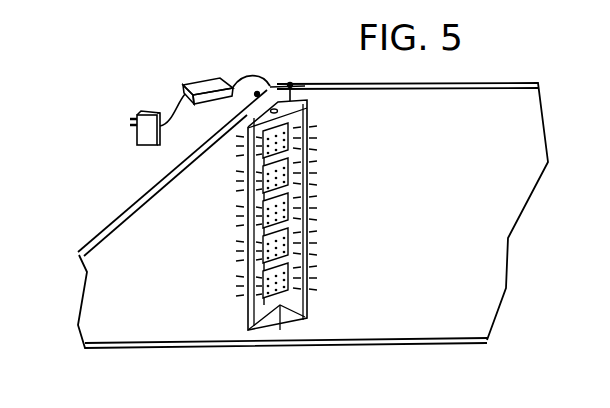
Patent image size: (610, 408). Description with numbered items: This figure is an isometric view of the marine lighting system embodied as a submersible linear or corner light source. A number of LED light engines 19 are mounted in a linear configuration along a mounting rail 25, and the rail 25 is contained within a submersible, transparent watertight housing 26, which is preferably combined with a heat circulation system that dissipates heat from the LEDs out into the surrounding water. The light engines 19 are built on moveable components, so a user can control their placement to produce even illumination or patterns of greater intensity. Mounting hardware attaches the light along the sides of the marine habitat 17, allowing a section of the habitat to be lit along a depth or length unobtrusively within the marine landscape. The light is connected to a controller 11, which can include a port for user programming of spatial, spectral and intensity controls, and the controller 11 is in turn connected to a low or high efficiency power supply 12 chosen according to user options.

The controller 11 is at (205, 88).
The power supply 12 is at (145, 142).
The marine habitat 17 is at (508, 113).
The LED light engines 19 is at (295, 167).
The mounting rail 25 is at (250, 233).
The submersible transparent watertight housing 26 is at (308, 228).